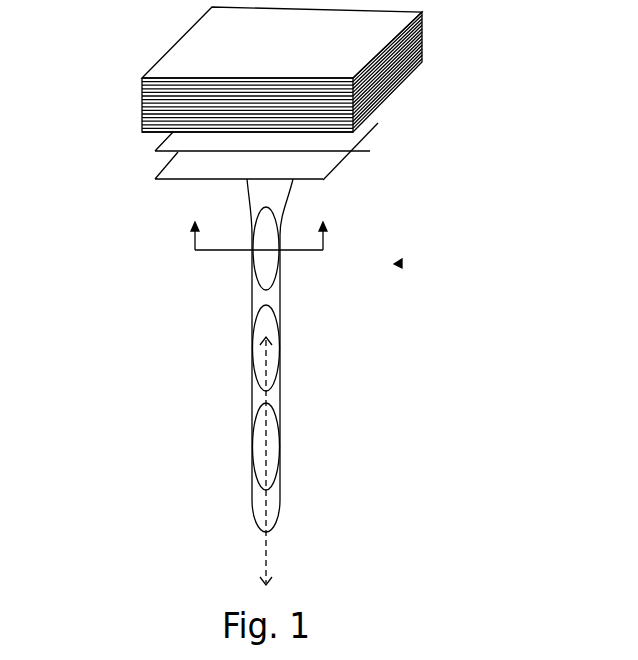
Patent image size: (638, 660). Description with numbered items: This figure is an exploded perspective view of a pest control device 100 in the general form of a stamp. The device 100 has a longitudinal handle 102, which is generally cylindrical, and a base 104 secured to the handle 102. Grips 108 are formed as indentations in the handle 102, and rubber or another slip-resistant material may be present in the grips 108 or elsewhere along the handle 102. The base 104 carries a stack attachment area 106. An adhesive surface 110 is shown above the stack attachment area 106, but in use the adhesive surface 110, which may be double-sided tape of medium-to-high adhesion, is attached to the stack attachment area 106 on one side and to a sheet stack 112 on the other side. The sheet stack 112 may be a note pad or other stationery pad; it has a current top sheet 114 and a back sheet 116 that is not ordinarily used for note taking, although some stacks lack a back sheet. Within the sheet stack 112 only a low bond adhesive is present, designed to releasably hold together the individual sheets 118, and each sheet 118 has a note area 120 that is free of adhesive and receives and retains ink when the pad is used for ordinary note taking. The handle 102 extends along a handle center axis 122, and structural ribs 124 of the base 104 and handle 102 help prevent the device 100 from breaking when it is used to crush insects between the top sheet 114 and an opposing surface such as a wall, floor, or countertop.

The device 100 is at (286, 296).
The longitudinal handle 102 is at (275, 397).
The base 104 is at (323, 172).
The stack attachment area 106 is at (175, 167).
The grips 108 is at (275, 352).
The adhesive surface 110 is at (317, 142).
The sheet stack 112 is at (422, 43).
The current top sheet 114 is at (347, 71).
The back sheet 116 is at (158, 132).
The individual sheets 118 is at (141, 116).
The note area 120 is at (259, 52).
The handle center axis 122 is at (268, 552).
The structural ribs 124 is at (248, 192).